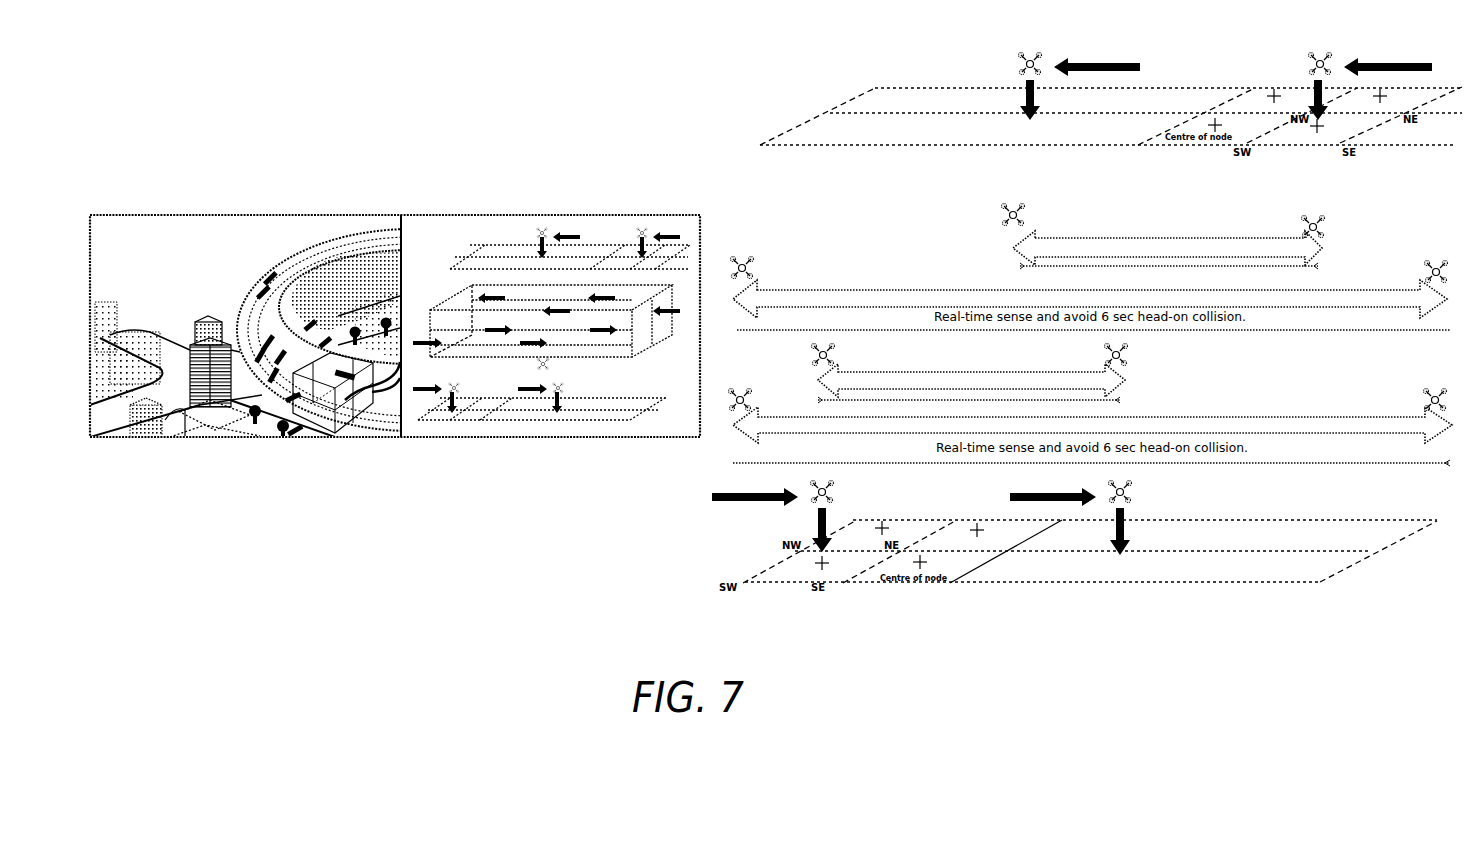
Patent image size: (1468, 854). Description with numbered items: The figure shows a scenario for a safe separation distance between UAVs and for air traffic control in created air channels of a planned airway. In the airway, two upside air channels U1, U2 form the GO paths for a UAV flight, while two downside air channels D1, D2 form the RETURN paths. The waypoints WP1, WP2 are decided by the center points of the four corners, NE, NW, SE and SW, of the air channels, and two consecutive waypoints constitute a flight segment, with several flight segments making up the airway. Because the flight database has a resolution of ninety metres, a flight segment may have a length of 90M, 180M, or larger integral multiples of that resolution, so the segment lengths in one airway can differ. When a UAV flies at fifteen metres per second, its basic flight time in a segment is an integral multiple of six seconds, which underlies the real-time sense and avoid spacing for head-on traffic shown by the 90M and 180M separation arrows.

The waypoint WP1 is at (1083, 313).
The waypoint WP2 is at (1086, 314).
The upside air channel U1 is at (1319, 115).
The upside air channel U2 is at (1401, 115).
The downside air channel D1 is at (800, 551).
The downside air channel D2 is at (895, 549).
The flight segment length 90M is at (1070, 317).
The flight segment length 180M is at (1092, 250).